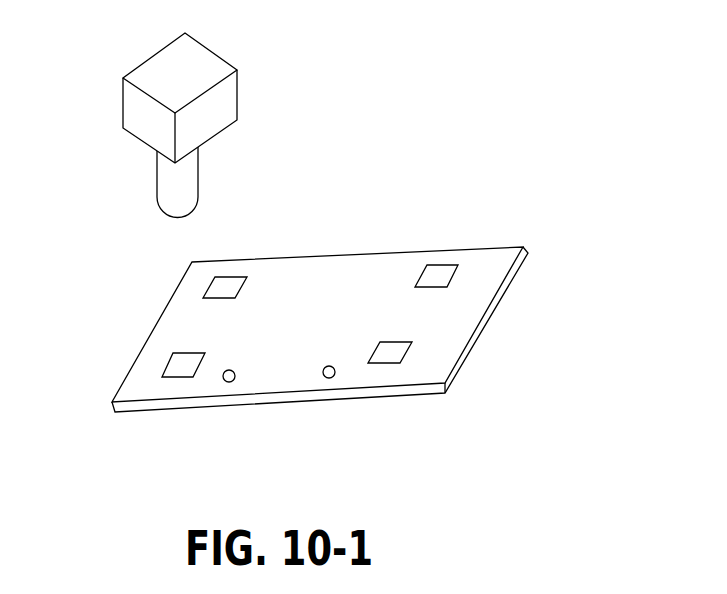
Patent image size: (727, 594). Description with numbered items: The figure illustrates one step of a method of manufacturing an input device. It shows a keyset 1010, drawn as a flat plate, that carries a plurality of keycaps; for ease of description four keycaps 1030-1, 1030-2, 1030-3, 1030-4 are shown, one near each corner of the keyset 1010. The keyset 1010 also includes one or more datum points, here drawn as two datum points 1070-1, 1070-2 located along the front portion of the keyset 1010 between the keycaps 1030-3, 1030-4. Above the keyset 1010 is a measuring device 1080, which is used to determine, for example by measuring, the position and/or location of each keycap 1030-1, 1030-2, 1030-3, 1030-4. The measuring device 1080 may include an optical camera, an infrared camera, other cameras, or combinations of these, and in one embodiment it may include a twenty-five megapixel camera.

The keyset 1010 is at (550, 231).
The keycap 1030-1 is at (225, 277).
The keycap 1030-2 is at (437, 265).
The keycap 1030-3 is at (178, 377).
The keycap 1030-4 is at (385, 363).
The datum point 1070-1 is at (232, 382).
The datum point 1070-2 is at (331, 378).
The measuring device 1080 is at (210, 51).